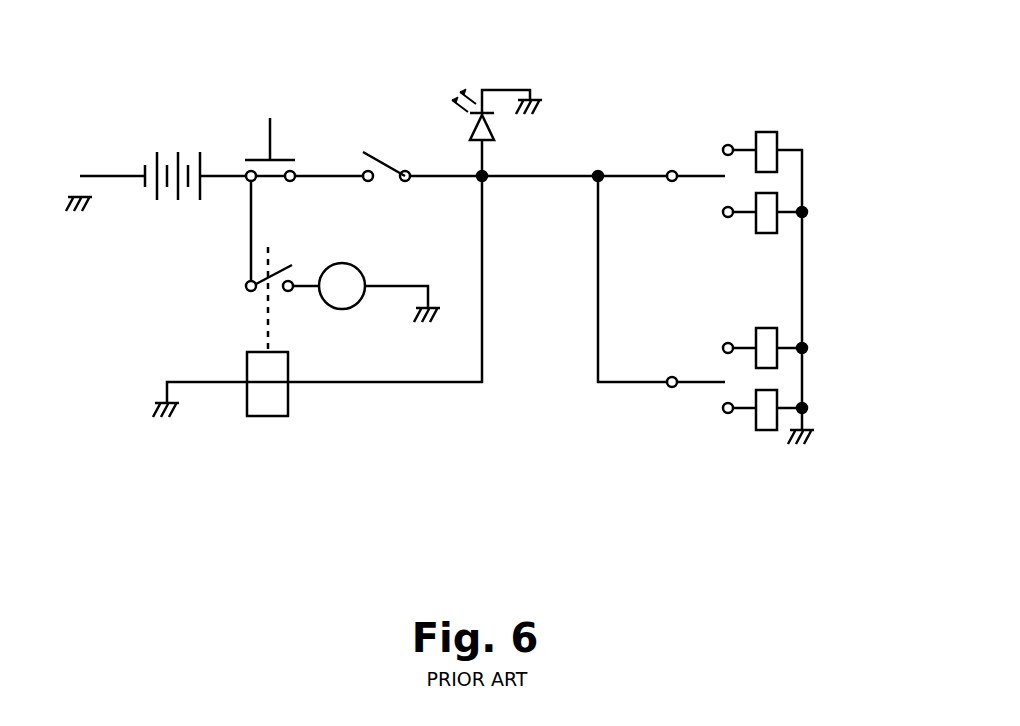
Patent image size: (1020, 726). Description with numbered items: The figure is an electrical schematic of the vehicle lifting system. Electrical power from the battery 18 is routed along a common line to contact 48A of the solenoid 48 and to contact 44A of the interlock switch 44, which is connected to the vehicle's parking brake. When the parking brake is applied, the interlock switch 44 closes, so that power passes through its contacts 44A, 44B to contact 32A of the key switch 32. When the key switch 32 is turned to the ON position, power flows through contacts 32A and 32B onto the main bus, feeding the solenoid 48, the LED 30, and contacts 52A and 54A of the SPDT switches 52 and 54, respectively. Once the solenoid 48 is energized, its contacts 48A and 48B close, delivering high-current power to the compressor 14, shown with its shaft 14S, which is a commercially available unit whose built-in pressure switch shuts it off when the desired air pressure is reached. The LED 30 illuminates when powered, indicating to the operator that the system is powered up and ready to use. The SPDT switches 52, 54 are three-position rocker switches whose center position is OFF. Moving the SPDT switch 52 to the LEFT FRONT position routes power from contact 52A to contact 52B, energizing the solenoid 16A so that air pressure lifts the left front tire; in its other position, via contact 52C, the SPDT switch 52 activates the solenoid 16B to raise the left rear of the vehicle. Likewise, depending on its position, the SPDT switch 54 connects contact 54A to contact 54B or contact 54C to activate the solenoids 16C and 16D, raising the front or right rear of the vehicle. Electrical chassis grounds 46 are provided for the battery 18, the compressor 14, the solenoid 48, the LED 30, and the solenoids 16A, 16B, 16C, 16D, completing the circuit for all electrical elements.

The battery 18 is at (168, 150).
The electrical chassis grounds 46 is at (75, 222).
The interlock switch 44 is at (272, 137).
The contact 44A is at (248, 182).
The contact 44B is at (292, 182).
The key switch 32 is at (392, 160).
The contact 32A is at (362, 171).
The contact 32B is at (405, 182).
The LED 30 is at (495, 132).
The compressor 14 is at (365, 264).
The motor shaft 14S is at (353, 282).
The solenoid 48 is at (268, 417).
The contact 48A is at (245, 290).
The contact 48B is at (291, 292).
The SPDT switch 52 is at (700, 175).
The contact 52A is at (669, 170).
The contact 52B is at (727, 144).
The switch terminal 52C is at (725, 218).
The SPDT switch 54 is at (700, 380).
The switch terminal 54A is at (669, 376).
The switch terminal 54B is at (727, 342).
The switch terminal 54C is at (724, 414).
The solenoid 16A is at (777, 135).
The solenoid 16B is at (777, 225).
The solenoid 16C is at (770, 328).
The solenoid 16D is at (777, 394).